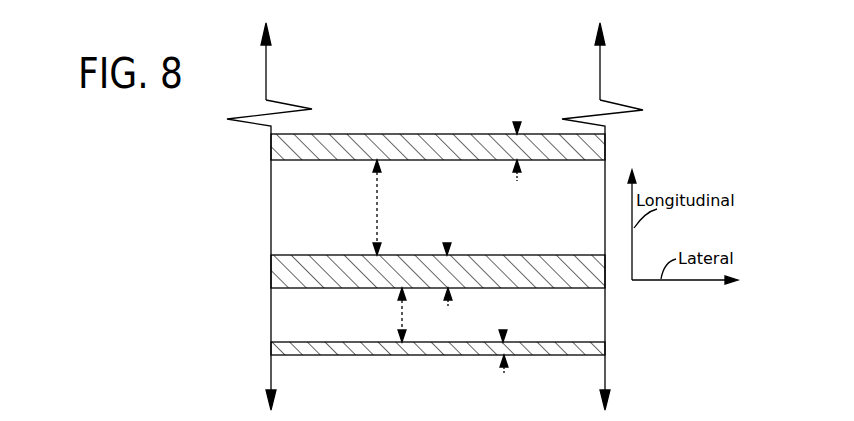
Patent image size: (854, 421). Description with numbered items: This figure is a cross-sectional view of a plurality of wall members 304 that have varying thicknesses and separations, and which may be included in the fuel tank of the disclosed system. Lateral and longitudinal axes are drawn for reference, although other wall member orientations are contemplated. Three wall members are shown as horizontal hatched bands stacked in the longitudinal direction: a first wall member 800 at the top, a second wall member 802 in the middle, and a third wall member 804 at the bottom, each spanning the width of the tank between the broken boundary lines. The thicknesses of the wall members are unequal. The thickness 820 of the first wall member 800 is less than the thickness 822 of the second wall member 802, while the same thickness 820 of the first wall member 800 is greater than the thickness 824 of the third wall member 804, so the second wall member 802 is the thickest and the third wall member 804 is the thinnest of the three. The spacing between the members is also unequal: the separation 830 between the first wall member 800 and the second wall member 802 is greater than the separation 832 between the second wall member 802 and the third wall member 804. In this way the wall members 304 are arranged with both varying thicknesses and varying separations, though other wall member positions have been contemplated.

The wall members 304 is at (503, 68).
The first wall member 800 is at (308, 139).
The second wall member 802 is at (289, 262).
The third wall member 804 is at (289, 348).
The thickness of the first wall member 820 is at (515, 122).
The thickness of the second wall member 822 is at (446, 243).
The thickness of the third wall member 824 is at (501, 330).
The separation between the first and second wall members 830 is at (379, 219).
The separation between the second and third wall members 832 is at (400, 316).